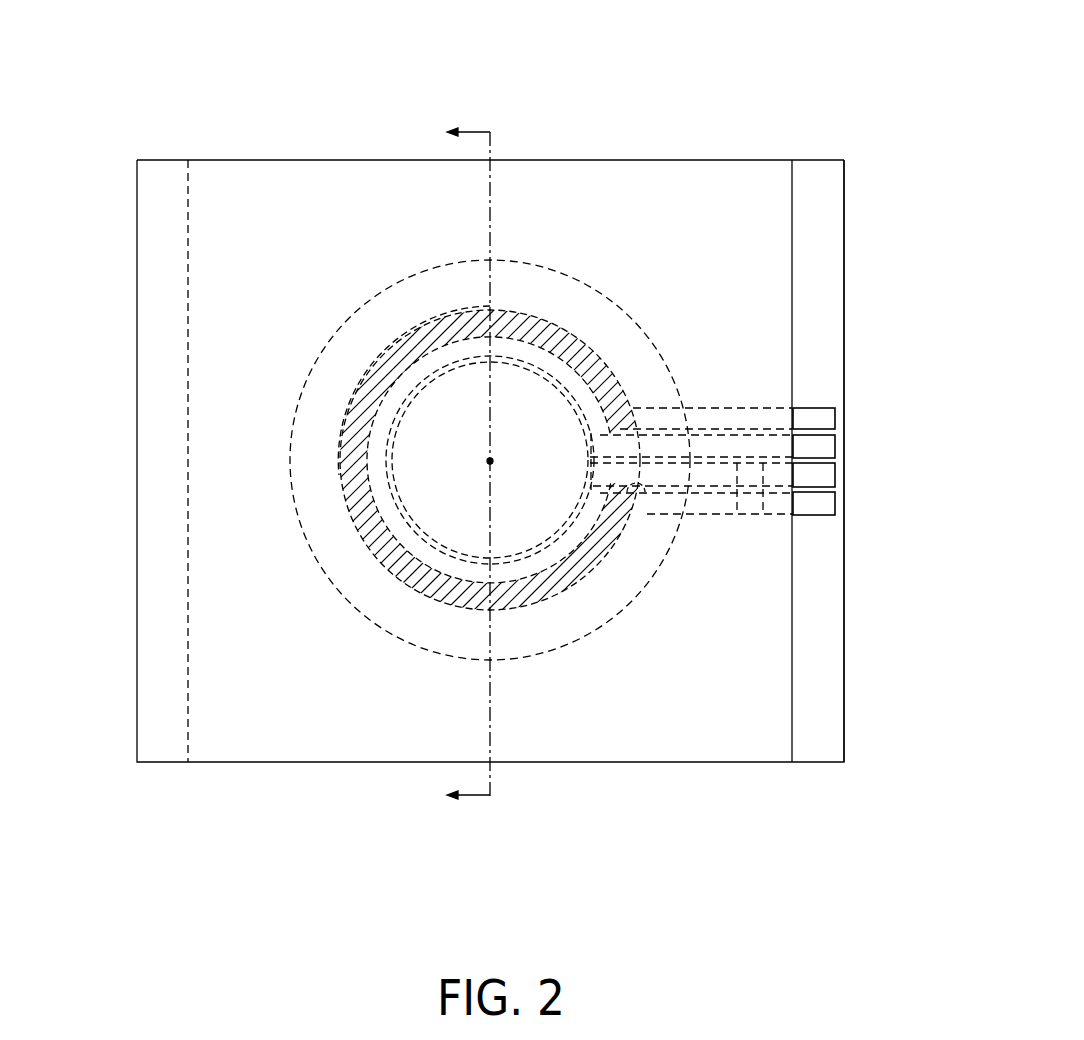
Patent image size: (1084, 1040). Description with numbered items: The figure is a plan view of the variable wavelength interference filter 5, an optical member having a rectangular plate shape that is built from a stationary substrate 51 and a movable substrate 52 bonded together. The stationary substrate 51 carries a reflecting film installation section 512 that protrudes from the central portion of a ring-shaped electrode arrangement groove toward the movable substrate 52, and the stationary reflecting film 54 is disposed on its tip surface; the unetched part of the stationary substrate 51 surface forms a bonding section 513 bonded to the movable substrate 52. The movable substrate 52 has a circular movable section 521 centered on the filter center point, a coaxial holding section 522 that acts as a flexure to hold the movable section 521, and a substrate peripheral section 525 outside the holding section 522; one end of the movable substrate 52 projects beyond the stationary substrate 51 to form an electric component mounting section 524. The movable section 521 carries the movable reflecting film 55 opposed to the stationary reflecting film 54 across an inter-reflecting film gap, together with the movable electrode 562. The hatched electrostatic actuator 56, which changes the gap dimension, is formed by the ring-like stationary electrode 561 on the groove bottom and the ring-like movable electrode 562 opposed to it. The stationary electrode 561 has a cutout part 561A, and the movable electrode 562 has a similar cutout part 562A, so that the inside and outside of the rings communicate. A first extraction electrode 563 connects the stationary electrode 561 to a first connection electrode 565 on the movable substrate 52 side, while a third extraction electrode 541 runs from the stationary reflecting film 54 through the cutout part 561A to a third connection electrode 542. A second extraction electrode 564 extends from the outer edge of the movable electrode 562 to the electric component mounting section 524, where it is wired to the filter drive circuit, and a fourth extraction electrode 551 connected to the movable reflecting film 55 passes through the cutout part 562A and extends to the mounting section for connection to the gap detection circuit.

The variable wavelength interference filter 5 is at (548, 88).
The stationary substrate 51 is at (142, 252).
The movable substrate 52 is at (817, 765).
The reflecting film installation section 512 is at (447, 557).
The bonding section 513 is at (700, 172).
The movable section 521 is at (450, 315).
The holding section 522 is at (580, 310).
The electric component mounting section 524 is at (828, 211).
The substrate peripheral section 525 is at (828, 697).
The third extraction electrode 541 is at (716, 480).
The third connection electrode 542 is at (828, 473).
The fourth extraction electrode 551 is at (828, 444).
The stationary reflecting film 54 is at (385, 545).
The movable reflecting film 55 is at (491, 472).
The electrostatic actuator 56 is at (517, 583).
The stationary electrode 561 is at (491, 412).
The movable electrode 562 is at (491, 412).
The cutout part 561A is at (635, 487).
The cutout part 562A is at (636, 487).
The first extraction electrode 563 is at (662, 517).
The second extraction electrode 564 is at (655, 405).
The first connection electrode 565 is at (828, 506).